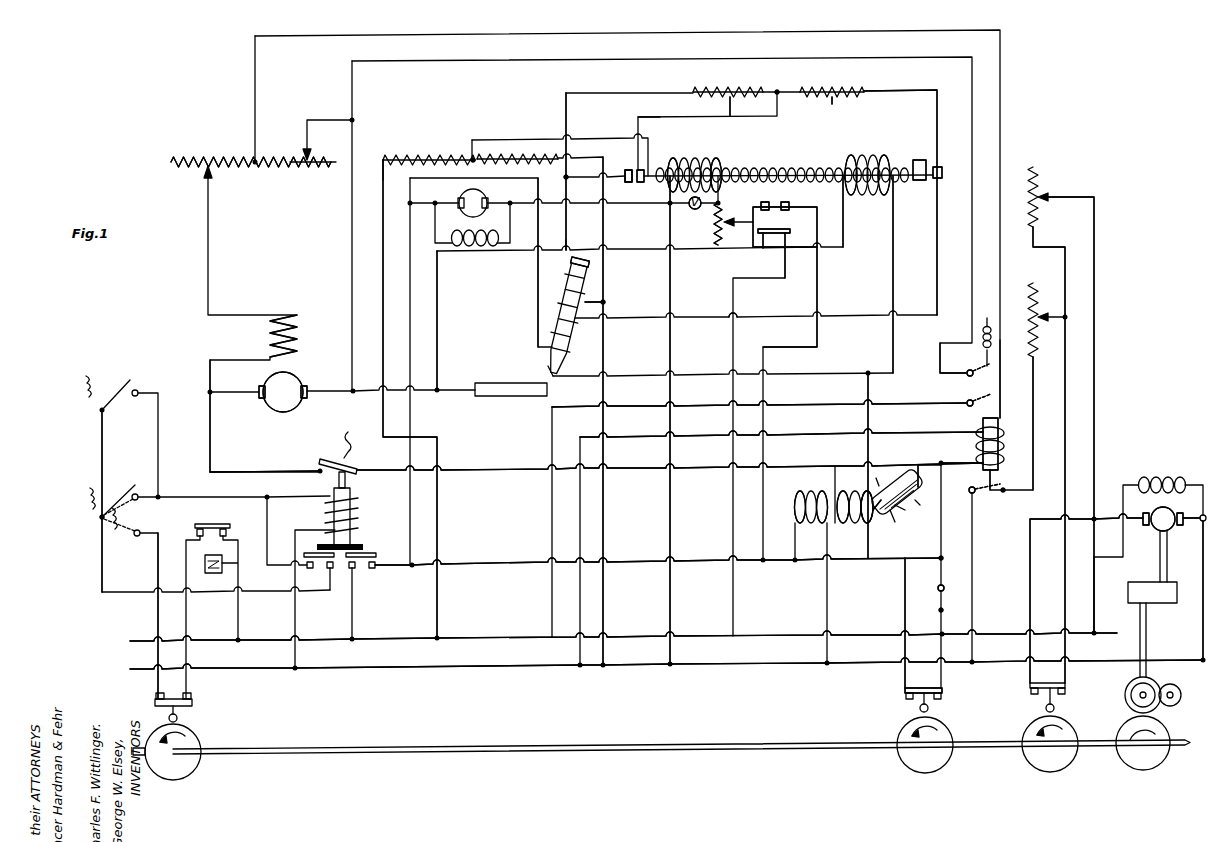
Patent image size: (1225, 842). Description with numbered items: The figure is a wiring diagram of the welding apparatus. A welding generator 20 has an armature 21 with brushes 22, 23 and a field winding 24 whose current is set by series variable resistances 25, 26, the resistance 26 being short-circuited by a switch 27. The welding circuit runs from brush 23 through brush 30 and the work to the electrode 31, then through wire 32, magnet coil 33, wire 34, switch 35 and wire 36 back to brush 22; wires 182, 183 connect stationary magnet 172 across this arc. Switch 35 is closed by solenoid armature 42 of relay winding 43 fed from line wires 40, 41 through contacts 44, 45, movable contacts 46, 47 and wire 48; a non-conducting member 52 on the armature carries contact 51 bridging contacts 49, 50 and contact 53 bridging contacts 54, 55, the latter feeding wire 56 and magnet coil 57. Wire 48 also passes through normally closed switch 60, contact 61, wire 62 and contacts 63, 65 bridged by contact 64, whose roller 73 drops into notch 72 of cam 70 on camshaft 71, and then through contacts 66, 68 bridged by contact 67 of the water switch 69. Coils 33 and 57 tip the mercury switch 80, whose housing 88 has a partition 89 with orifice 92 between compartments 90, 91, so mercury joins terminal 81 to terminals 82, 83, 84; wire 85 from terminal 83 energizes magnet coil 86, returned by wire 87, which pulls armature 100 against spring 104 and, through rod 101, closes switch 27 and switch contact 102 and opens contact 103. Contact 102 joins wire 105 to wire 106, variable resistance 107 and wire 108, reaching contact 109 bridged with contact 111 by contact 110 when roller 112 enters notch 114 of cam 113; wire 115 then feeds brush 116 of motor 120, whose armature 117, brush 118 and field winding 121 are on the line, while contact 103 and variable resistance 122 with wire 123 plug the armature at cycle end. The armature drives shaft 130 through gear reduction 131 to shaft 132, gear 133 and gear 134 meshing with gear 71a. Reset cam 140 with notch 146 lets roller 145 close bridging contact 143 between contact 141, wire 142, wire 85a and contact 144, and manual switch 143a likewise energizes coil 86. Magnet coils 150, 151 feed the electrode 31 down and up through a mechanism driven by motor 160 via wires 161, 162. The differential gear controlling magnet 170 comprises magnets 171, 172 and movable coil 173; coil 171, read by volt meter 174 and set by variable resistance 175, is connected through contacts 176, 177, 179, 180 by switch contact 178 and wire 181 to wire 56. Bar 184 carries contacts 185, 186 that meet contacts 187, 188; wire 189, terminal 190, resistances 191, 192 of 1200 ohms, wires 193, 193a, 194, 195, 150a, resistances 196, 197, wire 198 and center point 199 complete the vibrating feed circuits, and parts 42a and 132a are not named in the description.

The welding generator 20 is at (283, 405).
The armature 21 is at (295, 380).
The commutator brush 22 is at (258, 396).
The commutator brush 23 is at (308, 397).
The field winding 24 is at (268, 338).
The variable resistance 25 is at (209, 160).
The variable resistance 26 is at (318, 160).
The switch 27 is at (950, 367).
The brush 30 is at (509, 396).
The electrode 31 is at (548, 366).
The wire 32 is at (622, 372).
The magnet coil 33 is at (846, 492).
The wire 34 is at (498, 468).
The switch 35 is at (352, 467).
The wire 36 is at (208, 432).
The line wire 40 is at (402, 637).
The line wire 41 is at (410, 667).
The solenoid armature 42 is at (352, 490).
The spring 42a is at (340, 445).
The magnet winding 43 is at (358, 512).
The switch contact 44 is at (139, 500).
The switch contact 45 is at (140, 391).
The movable switch contact 46 is at (127, 480).
The movable switch contact 47 is at (118, 385).
The wire 48 is at (100, 443).
The contact 49 is at (333, 572).
The contact 50 is at (305, 568).
The movable contact 51 is at (305, 553).
The non-conducting member 52 is at (364, 545).
The contact 53 is at (377, 553).
The contact 54 is at (355, 572).
The contact 55 is at (378, 570).
The wire 56 is at (497, 566).
The magnet coil 57 is at (802, 492).
The normally closed switch 60 is at (100, 519).
The contact 61 is at (136, 537).
The wire 62 is at (156, 612).
The contact 63 is at (162, 696).
The bridging contact 64 is at (193, 703).
The contact 65 is at (192, 695).
The contact 66 is at (196, 538).
The switch contact 67 is at (212, 524).
The contact 68 is at (227, 534).
The water switch 69 is at (223, 564).
The cam 70 is at (195, 766).
The camshaft 71 is at (612, 756).
The gear 71a is at (1160, 758).
The notch 72 is at (167, 719).
The roller 73 is at (190, 731).
The mercury switch 80 is at (898, 475).
The terminal 81 is at (895, 522).
The terminal 82 is at (969, 491).
The terminal 83 is at (942, 463).
The terminal 84 is at (919, 462).
The wire 85 is at (955, 466).
The wire 85a is at (944, 556).
The magnet coil 86 is at (975, 433).
The wire 87 is at (888, 432).
The housing 88 is at (876, 478).
The partition 89 is at (866, 528).
The compartment 90 is at (880, 522).
The compartment 91 is at (920, 505).
The orifice 92 is at (905, 510).
The armature 100 is at (998, 420).
The rod 101 is at (1001, 376).
The switch contact 102 is at (962, 397).
The switch contact 103 is at (1001, 493).
The spring 104 is at (985, 326).
The wire 105 is at (782, 406).
The wire 106 is at (1033, 358).
The variable resistance 107 is at (1022, 290).
The wire 108 is at (1066, 264).
The switch contact 109 is at (1066, 692).
The contact 110 is at (1047, 683).
The contact 111 is at (1032, 694).
The roller 112 is at (1056, 708).
The cam 113 is at (1028, 760).
The notch 114 is at (1040, 727).
The wire 115 is at (1029, 568).
The brush 116 is at (1146, 526).
The armature 117 is at (1170, 510).
The brush 118 is at (1180, 526).
The electric motor 120 is at (786, 326).
The field winding 121 is at (1148, 477).
The variable resistance 122 is at (1033, 222).
The wire 123 is at (1095, 327).
The shaft 130 is at (1162, 575).
The gear reduction 131 is at (1126, 598).
The shaft 132 is at (1147, 630).
The conductor 132a is at (1152, 680).
The gear 133 is at (1160, 684).
The gear 134 is at (1172, 706).
The reset cam 140 is at (903, 760).
The contact 141 is at (905, 690).
The wire 142 is at (904, 613).
The bridging contact 143 is at (942, 690).
The auxiliary switch 143a is at (940, 594).
The contact 144 is at (940, 698).
The roller 145 is at (906, 696).
The notch 146 is at (900, 725).
The magnet coil 150 is at (548, 328).
The wire 150a is at (746, 316).
The magnet coil 151 is at (560, 278).
The electric motor 160 is at (457, 198).
The wire 161 is at (541, 220).
The wire 162 is at (668, 237).
The differential gear controlling magnet 170 is at (779, 158).
The stationary magnet 171 is at (690, 157).
The stationary magnet 172 is at (870, 154).
The movable electromagnet 173 is at (777, 167).
The volt meter 174 is at (697, 210).
The variable resistance 175 is at (728, 212).
The switch contact 176 is at (762, 250).
The switch contact 177 is at (767, 202).
The switch contact 178 is at (780, 229).
The contact 179 is at (786, 248).
The contact 180 is at (790, 204).
The wire 181 is at (818, 340).
The wire 182 is at (438, 283).
The wire 183 is at (892, 290).
The bar 184 is at (629, 183).
The contact 185 is at (638, 169).
The contact 186 is at (919, 182).
The contact 187 is at (622, 170).
The contact 188 is at (941, 180).
The wire 189 is at (652, 118).
The terminal 190 is at (777, 90).
The resistance 191 is at (730, 116).
The resistance 192 is at (832, 104).
The wire 193 is at (565, 98).
The wire 193a is at (586, 220).
The wire 194 is at (938, 92).
The wire 195 is at (610, 294).
The resistance 196 is at (552, 160).
The resistance 197 is at (388, 162).
The wire 198 is at (384, 250).
The center point 199 is at (472, 139).
The resistor 1200 is at (778, 80).